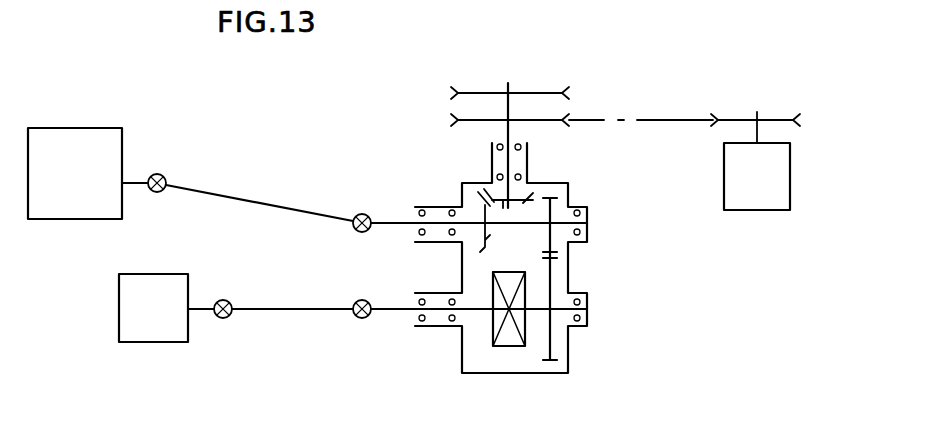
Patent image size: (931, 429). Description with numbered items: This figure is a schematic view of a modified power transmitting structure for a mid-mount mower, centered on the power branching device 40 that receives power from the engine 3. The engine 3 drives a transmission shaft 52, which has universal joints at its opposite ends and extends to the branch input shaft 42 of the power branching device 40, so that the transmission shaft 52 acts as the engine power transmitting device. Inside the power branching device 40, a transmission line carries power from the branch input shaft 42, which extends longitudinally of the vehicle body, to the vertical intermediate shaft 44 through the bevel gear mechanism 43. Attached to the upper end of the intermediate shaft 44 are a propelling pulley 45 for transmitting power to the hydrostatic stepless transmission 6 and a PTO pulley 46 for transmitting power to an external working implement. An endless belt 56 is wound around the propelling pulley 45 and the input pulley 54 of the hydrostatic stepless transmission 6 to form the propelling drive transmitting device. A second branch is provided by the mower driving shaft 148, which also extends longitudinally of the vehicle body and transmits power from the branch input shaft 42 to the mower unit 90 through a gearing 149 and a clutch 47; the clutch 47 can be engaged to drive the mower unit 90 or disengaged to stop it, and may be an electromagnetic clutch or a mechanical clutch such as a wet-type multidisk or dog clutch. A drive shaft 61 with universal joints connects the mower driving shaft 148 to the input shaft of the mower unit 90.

The engine 3 is at (75, 173).
The hydrostatic stepless transmission (HST) 6 is at (757, 176).
The power branching device 40 is at (573, 343).
The branch input shaft 42 is at (383, 220).
The bevel gear mechanism 43 is at (470, 202).
The vertical intermediate shaft 44 is at (527, 161).
The propelling pulley 45 is at (478, 120).
The PTO pulley 46 is at (543, 93).
The clutch 47 is at (490, 290).
The transmission shaft 52 is at (266, 203).
The input pulley 54 is at (777, 120).
The endless belt 56 is at (667, 122).
The drive shaft 61 is at (290, 312).
The mower unit 90 is at (153, 308).
The mower driving shaft 148 is at (398, 312).
The gearing 149 is at (567, 256).